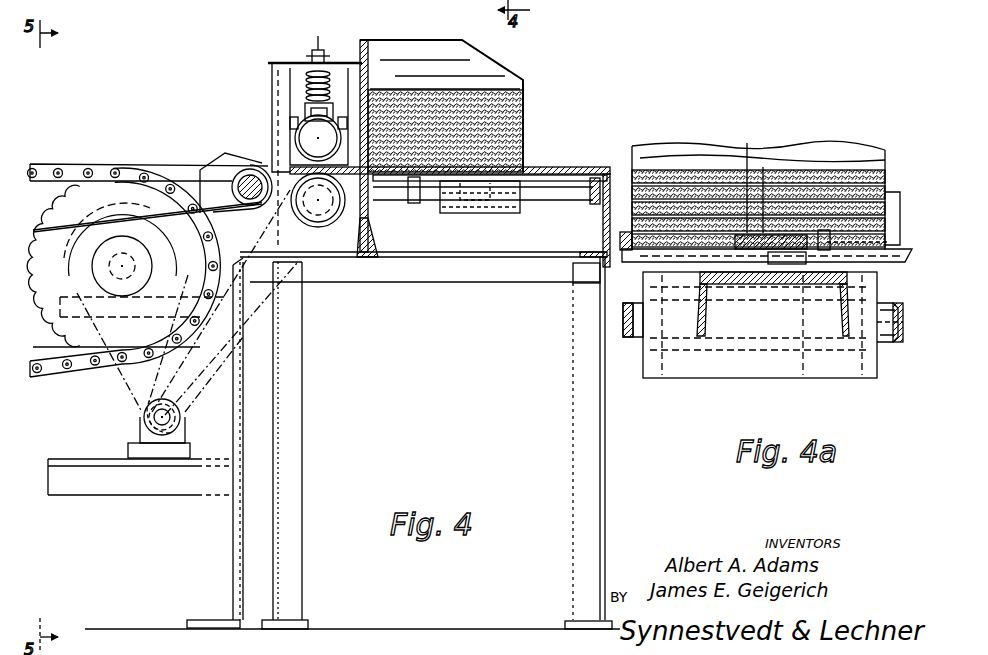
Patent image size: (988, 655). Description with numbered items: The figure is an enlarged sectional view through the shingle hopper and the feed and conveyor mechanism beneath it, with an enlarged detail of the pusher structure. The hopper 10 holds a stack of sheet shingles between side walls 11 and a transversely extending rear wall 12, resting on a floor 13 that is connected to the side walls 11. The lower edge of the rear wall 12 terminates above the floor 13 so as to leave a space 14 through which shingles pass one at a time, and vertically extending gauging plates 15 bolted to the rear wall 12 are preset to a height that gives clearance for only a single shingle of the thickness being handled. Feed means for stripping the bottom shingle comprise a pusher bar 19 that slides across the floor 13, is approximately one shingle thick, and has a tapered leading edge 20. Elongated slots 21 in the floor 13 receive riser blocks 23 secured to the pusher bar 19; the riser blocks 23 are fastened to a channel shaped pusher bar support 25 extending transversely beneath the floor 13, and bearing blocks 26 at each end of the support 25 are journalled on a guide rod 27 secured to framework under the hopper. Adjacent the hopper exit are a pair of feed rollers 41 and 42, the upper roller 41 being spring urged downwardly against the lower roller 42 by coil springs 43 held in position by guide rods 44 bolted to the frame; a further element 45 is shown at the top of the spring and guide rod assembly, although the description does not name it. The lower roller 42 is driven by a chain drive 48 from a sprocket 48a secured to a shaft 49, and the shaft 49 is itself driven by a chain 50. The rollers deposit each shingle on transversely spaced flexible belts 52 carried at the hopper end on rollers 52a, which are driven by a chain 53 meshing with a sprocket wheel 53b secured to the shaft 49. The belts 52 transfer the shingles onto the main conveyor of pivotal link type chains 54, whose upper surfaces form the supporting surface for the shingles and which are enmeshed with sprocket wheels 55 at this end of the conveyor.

In FIG. 4, the hopper 10 is at (545, 82).
In FIG. 4, the side walls 11 is at (485, 68).
In FIG. 4, the rear wall 12 is at (360, 52).
In FIG. 4A, the floor 13 is at (642, 262).
In FIG. 4, the space 14 is at (375, 192).
In FIG. 4, the gauging plates 15 is at (366, 48).
In FIG. 4, the pusher bar 19 is at (530, 178).
In FIG. 4A, the pusher bar 19 is at (763, 167).
In FIG. 4A, the tapered leading edge 20 is at (747, 150).
In FIG. 4, the elongated slots 21 is at (600, 176).
In FIG. 4, the riser blocks 23 is at (520, 188).
In FIG. 4A, the riser blocks 23 is at (868, 278).
In FIG. 4, the pusher bar support 25 is at (466, 205).
In FIG. 4A, the pusher bar support 25 is at (698, 315).
In FIG. 4, the bearing blocks 26 is at (500, 215).
In FIG. 4A, the bearing blocks 26 is at (693, 372).
In FIG. 4, the guide rod 27 is at (565, 203).
In FIG. 4A, the guide rod 27 is at (885, 340).
In FIG. 4, the feed roller 41 is at (298, 122).
In FIG. 4, the feed roller 42 is at (326, 226).
In FIG. 4, the coil springs 43 is at (310, 92).
In FIG. 4, the guide rods 44 is at (320, 48).
In FIG. 4, the lock nut 45 is at (310, 58).
In FIG. 4, the chain drive 48 is at (290, 290).
In FIG. 4, the sprocket 48a is at (182, 410).
In FIG. 4, the shaft 49 is at (152, 422).
In FIG. 4, the chain 50 is at (125, 300).
In FIG. 4, the flexible belts 52 is at (96, 172).
In FIG. 4, the rollers 52a is at (255, 170).
In FIG. 4, the chain 53 is at (226, 335).
In FIG. 4, the sprocket wheel 53b is at (132, 404).
In FIG. 4, the pivotal link type chains 54 is at (72, 170).
In FIG. 4, the sprocket wheels 55 is at (80, 205).